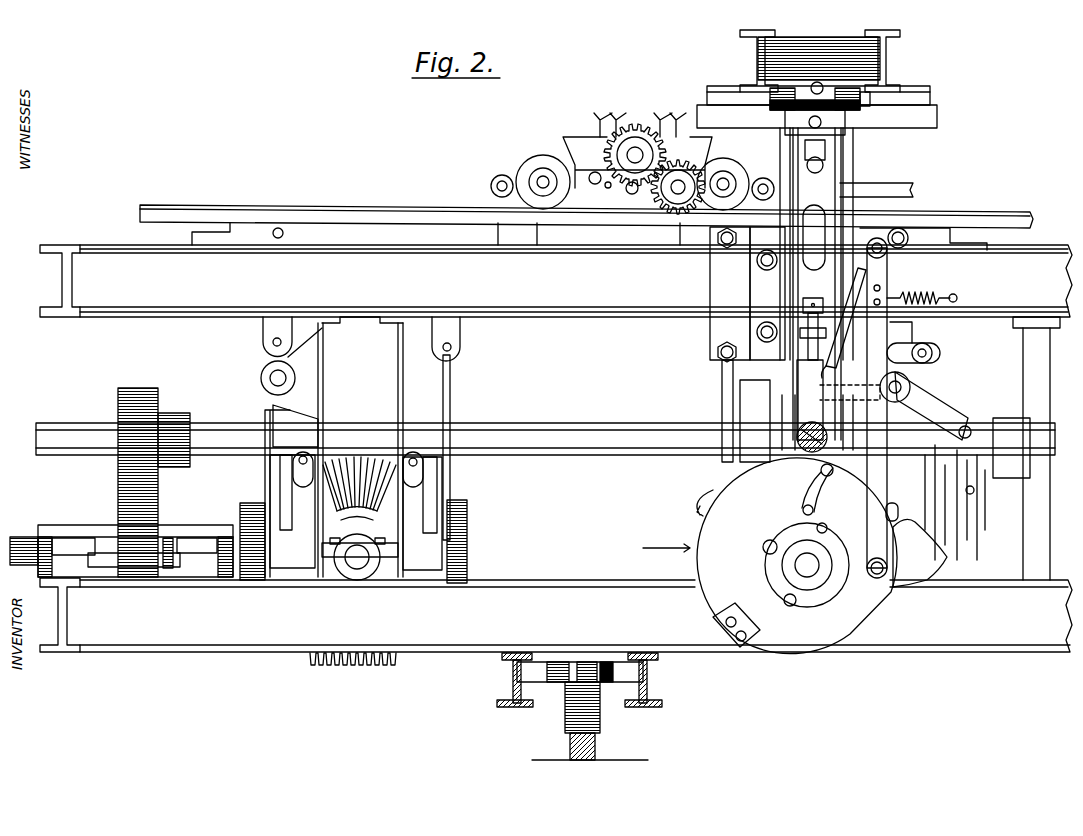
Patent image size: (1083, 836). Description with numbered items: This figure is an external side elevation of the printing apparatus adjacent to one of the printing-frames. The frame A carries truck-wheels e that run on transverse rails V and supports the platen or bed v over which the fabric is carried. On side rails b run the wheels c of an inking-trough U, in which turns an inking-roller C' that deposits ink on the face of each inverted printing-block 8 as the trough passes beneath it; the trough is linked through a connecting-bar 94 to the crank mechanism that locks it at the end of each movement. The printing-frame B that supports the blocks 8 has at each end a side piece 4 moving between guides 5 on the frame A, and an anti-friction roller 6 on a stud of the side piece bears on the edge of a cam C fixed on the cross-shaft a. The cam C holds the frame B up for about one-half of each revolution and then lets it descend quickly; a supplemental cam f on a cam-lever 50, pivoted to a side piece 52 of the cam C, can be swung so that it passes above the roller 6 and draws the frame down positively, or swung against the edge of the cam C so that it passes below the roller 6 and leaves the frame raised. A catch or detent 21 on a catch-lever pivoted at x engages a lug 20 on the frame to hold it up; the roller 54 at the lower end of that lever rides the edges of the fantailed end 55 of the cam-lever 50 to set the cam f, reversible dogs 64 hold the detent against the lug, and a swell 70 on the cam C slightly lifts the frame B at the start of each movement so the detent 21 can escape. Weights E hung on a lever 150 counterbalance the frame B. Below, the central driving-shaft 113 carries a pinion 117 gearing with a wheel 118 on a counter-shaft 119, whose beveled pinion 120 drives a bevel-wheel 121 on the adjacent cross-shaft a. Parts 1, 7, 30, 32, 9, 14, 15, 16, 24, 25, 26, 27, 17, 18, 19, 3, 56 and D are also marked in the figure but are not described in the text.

The roller 1 is at (819, 49).
The roller flange 7 is at (758, 42).
The printing-frame B is at (892, 58).
The hole 32 is at (811, 88).
The flange 30 is at (880, 62).
The plate 9 is at (920, 100).
The printing-blocks 8 is at (817, 116).
The bearing block 16 is at (775, 98).
The bearing block 15 is at (850, 110).
The bar 14 is at (778, 112).
The plate 25 is at (800, 130).
The pin 24 is at (832, 128).
The block 26 is at (830, 142).
The cup 27 is at (811, 175).
The connecting-bar 94 is at (915, 190).
The side piece 4 is at (826, 228).
The slot D is at (814, 248).
The block 17 is at (802, 302).
The stud 18 is at (796, 330).
The guides 5 is at (788, 301).
The transverse rock-shaft x is at (868, 398).
The spring 56 is at (940, 295).
The catch or detent 21 is at (913, 325).
The reversible dogs 64 is at (942, 353).
The lever 150 is at (897, 406).
The plate 19 is at (790, 370).
The lug 20 is at (835, 375).
The base 3 is at (812, 424).
The anti-friction roller 6 is at (797, 452).
The cam C is at (770, 556).
The supplemental cam f is at (825, 489).
The side piece 52 is at (862, 615).
The roller 54 is at (868, 577).
The fantailed end 55 is at (920, 553).
The cam-lever 50 is at (900, 513).
The swell 70 is at (718, 627).
The weights E is at (992, 448).
The inking-trough U is at (621, 153).
The wheels c is at (525, 170).
The inking-roller C' is at (654, 154).
The cross-shaft a is at (577, 523).
The bevel-wheel 121 is at (465, 548).
The central driving-shaft 113 is at (90, 430).
The pinion 117 is at (148, 398).
The wheel 118 is at (160, 470).
The counter-shaft 119 is at (28, 545).
The beveled pinion 120 is at (150, 625).
The truck-wheels e is at (600, 720).
The transverse rails V is at (570, 744).
The side rails b is at (1000, 216).
The platen or bed v is at (603, 237).
The frame A is at (556, 281).